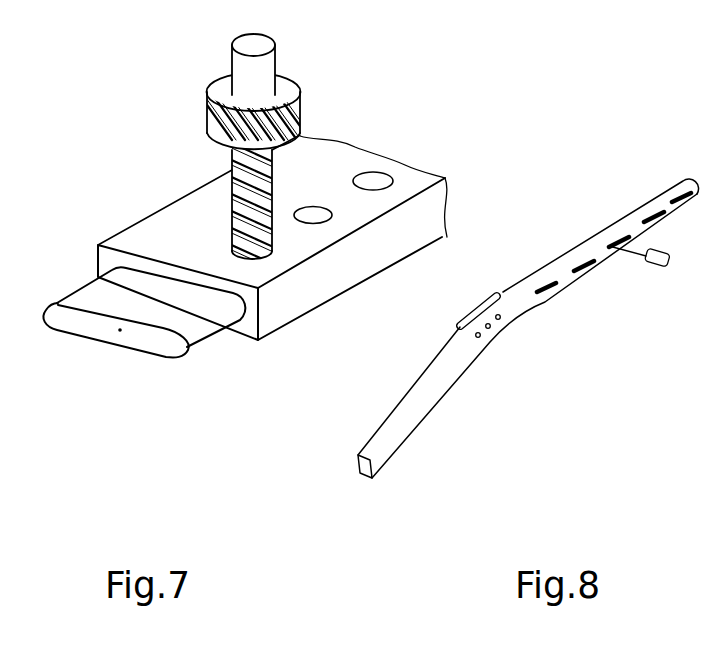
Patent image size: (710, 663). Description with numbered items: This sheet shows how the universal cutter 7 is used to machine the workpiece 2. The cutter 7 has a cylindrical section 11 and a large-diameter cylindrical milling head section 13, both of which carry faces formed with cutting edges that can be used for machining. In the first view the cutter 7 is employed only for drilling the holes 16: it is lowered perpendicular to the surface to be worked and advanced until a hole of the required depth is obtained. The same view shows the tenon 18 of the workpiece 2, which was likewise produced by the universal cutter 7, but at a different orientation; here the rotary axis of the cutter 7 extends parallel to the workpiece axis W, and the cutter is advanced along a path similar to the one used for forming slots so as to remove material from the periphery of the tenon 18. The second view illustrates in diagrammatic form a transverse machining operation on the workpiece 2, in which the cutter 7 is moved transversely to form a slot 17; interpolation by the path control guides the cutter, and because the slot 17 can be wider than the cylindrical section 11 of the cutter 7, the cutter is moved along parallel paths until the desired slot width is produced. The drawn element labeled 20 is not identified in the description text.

In FIG. 7, the workpiece 2 is at (152, 242).
In FIG. 7, the universal cutter 7 is at (243, 178).
In FIG. 7, the cylindrical section 11 is at (0, 292).
In FIG. 7, the large-diameter cylindrical milling head section 13 is at (0, 147).
In FIG. 7, the holes 16 is at (375, 185).
In FIG. 7, the tenon 18 is at (203, 315).
In FIG. 7, the workpiece axis W is at (112, 336).
In FIG. 8, the slot 17 is at (610, 237).
In FIG. 8, the spring blade 20 is at (513, 307).